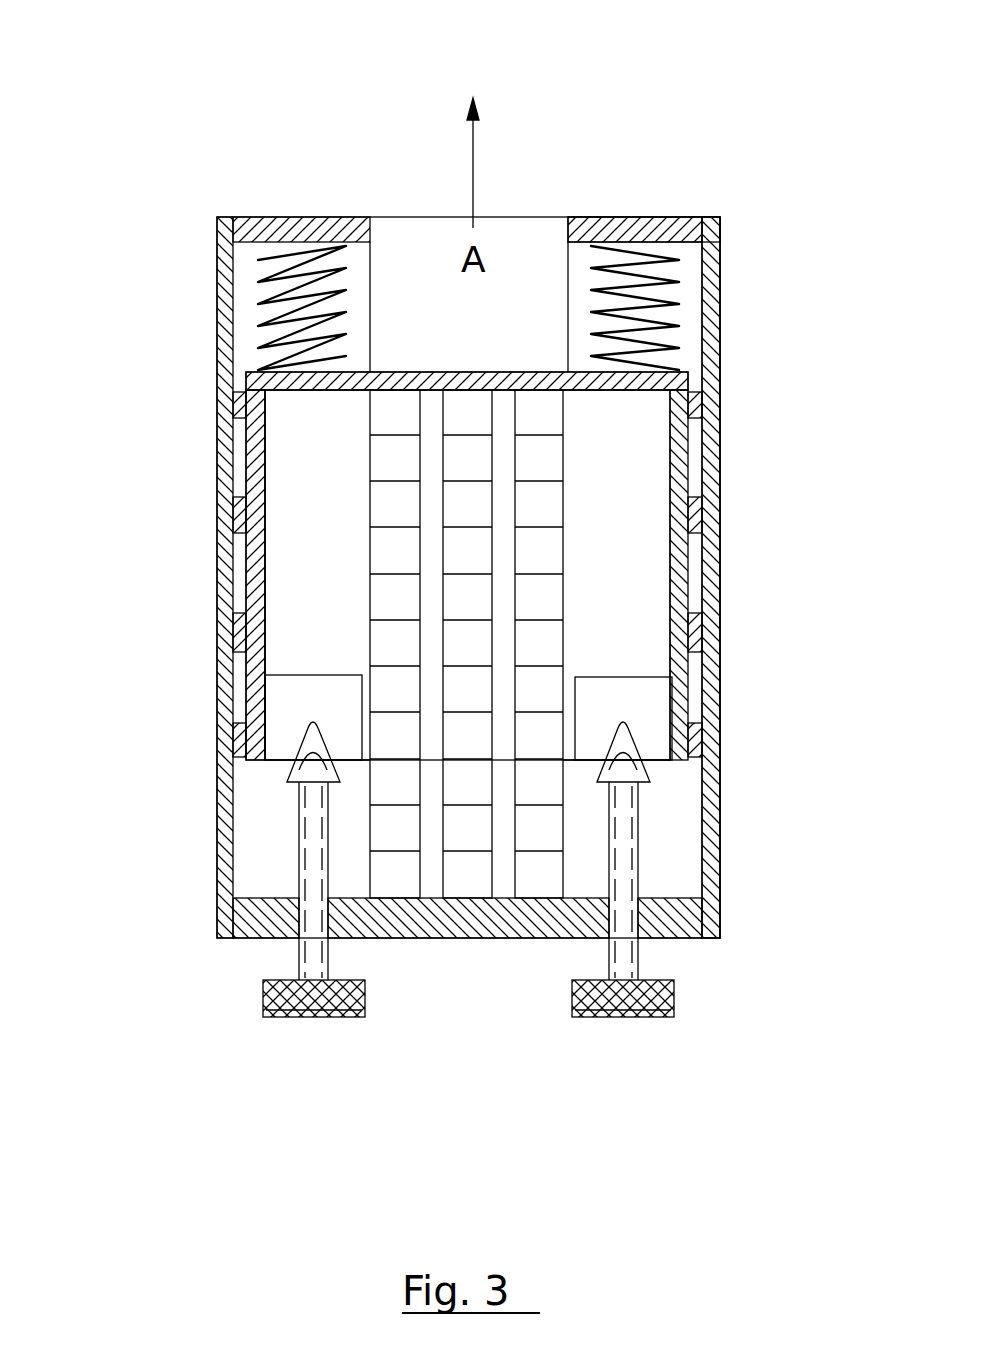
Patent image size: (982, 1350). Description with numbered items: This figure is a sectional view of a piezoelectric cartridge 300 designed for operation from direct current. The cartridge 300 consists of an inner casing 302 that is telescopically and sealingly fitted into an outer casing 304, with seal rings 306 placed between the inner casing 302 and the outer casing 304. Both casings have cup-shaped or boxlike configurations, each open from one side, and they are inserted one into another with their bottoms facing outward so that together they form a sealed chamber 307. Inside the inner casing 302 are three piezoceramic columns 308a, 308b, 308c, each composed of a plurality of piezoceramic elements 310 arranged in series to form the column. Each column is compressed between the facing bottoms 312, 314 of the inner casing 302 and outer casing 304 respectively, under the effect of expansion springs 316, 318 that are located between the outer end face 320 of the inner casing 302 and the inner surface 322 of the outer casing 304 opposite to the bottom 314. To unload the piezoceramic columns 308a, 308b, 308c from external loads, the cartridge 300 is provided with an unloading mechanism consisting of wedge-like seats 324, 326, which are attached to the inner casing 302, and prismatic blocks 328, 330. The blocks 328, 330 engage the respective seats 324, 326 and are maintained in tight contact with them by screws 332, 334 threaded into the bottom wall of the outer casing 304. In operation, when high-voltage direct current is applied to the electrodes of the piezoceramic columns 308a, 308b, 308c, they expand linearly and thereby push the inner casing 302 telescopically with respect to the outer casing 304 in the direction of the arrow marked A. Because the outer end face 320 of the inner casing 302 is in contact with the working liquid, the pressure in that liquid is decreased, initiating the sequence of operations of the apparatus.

The piezoelectric cartridge 300 is at (265, 165).
The inner casing 302 is at (680, 472).
The outer casing 304 is at (718, 700).
The seal rings 306 is at (702, 520).
The sealed chamber 307 is at (288, 438).
The piezoceramic column 308a is at (392, 888).
The piezoceramic column 308b is at (467, 882).
The piezoceramic column 308c is at (545, 880).
The piezoceramic elements 310 is at (545, 415).
The bottom of inner casing 312 is at (240, 420).
The bottom of outer casing 314 is at (672, 900).
The expansion spring 316 is at (262, 282).
The expansion spring 318 is at (643, 250).
The outer end face of inner casing 320 is at (247, 372).
The inner surface of outer casing 322 is at (640, 280).
The wedge-like seat 324 is at (290, 712).
The wedge-like seat 326 is at (652, 692).
The prismatic block 328 is at (298, 778).
The prismatic block 330 is at (650, 782).
The screw 332 is at (300, 840).
The screw 334 is at (640, 828).